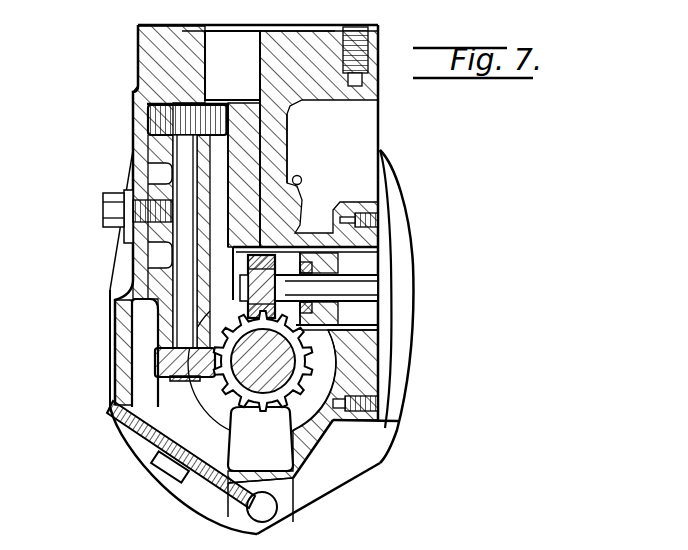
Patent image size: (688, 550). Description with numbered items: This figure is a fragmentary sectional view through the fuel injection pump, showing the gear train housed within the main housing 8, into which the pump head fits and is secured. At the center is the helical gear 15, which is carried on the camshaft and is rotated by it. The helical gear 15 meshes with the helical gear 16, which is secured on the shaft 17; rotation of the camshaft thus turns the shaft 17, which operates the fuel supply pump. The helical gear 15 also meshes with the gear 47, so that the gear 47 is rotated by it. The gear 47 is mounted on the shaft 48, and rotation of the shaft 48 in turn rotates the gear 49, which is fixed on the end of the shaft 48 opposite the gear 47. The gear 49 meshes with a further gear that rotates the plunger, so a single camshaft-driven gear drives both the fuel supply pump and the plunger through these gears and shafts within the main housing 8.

The main housing 8 is at (318, 452).
The helical gear 15 is at (214, 380).
The helical gear 16 is at (288, 250).
The shaft 17 is at (318, 288).
The gear 47 is at (156, 360).
The shaft 48 is at (185, 158).
The gear 49 is at (147, 122).